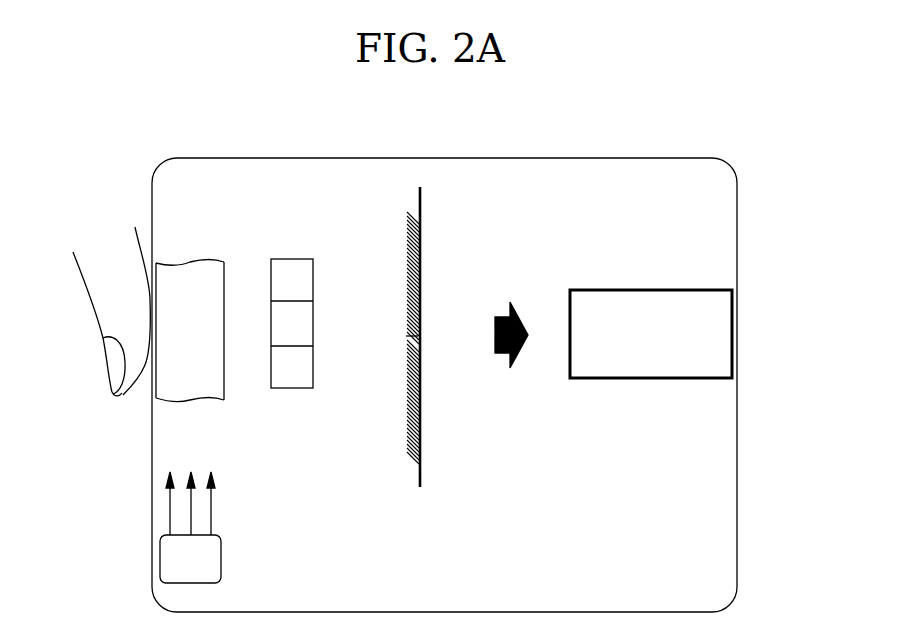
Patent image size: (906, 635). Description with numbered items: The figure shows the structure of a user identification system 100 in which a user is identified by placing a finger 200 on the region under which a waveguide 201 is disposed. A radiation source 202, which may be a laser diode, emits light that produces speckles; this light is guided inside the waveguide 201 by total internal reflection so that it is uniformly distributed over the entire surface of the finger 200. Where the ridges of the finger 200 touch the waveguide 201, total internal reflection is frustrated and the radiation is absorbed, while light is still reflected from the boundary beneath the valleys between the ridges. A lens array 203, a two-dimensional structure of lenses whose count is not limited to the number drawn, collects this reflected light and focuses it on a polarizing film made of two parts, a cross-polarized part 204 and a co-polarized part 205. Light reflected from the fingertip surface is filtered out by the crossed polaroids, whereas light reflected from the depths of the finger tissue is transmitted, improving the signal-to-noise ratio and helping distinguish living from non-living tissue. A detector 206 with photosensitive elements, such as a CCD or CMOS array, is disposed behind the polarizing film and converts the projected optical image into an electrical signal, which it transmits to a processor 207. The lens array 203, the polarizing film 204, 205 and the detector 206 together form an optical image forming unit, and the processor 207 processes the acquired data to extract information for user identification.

The user identification system 100 is at (598, 157).
The finger 200 is at (88, 298).
The waveguide 201 is at (154, 383).
The radiation source 202 is at (222, 558).
The lens array 203 is at (291, 389).
The cross-polarized part 204 is at (407, 443).
The co-polarized part 205 is at (407, 238).
The detector 206 is at (421, 270).
The processor 207 is at (647, 288).